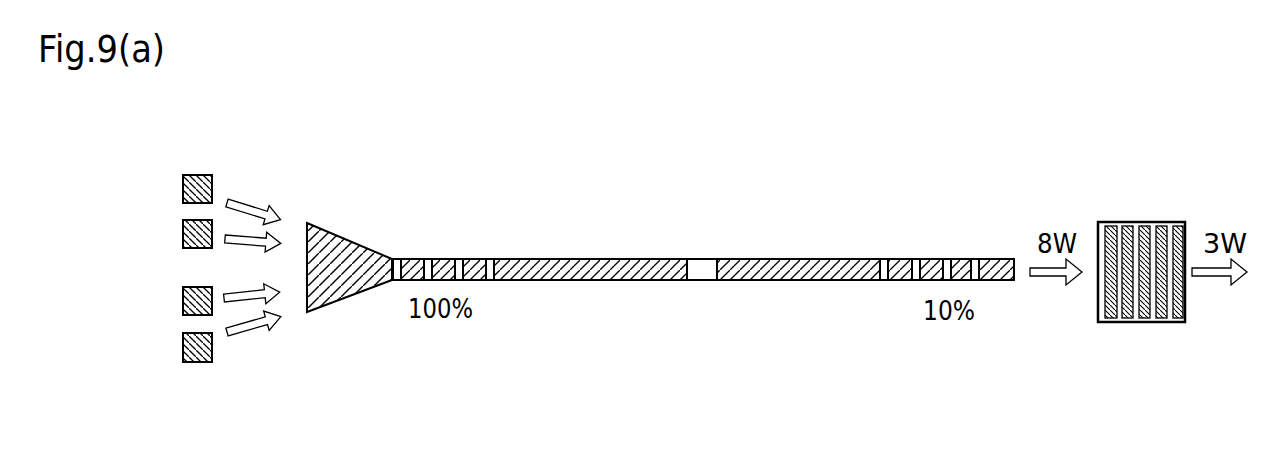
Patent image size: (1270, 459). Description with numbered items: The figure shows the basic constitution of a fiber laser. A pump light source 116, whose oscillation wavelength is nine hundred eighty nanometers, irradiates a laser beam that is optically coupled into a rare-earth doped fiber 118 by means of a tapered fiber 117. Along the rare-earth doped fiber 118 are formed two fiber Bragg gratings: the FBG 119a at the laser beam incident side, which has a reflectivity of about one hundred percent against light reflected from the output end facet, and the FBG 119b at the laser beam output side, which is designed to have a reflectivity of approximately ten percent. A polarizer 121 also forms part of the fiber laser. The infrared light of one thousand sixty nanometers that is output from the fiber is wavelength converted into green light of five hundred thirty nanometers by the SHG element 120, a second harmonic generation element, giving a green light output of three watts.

The pump light source 116 is at (190, 175).
The tapered fiber 117 is at (340, 300).
The rare-earth doped fiber 118 is at (557, 262).
The fiber Bragg grating 119a is at (495, 251).
The fiber Bragg grating 119b is at (978, 251).
The SHG element 120 is at (1142, 322).
The polarizer 121 is at (700, 270).